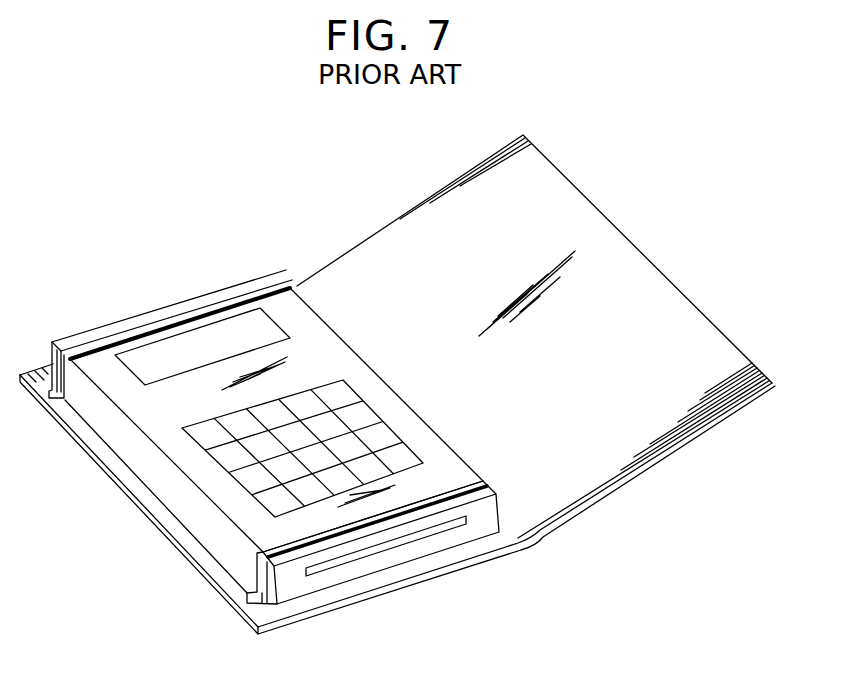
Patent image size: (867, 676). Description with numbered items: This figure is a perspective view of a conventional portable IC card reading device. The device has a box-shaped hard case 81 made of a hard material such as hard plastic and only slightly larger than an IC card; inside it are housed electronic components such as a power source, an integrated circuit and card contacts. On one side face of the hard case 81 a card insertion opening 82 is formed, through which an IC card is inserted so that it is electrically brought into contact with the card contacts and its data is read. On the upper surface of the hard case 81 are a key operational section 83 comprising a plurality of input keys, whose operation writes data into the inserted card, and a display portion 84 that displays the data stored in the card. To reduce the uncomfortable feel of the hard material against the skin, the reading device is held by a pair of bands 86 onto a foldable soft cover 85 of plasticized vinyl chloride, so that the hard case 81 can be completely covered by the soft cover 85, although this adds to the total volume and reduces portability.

The hard case 81 is at (213, 520).
The card insertion opening 82 is at (433, 535).
The key operational section 83 is at (367, 417).
The display portion 84 is at (243, 322).
The soft cover 85 is at (518, 522).
The bands 86 is at (128, 333).